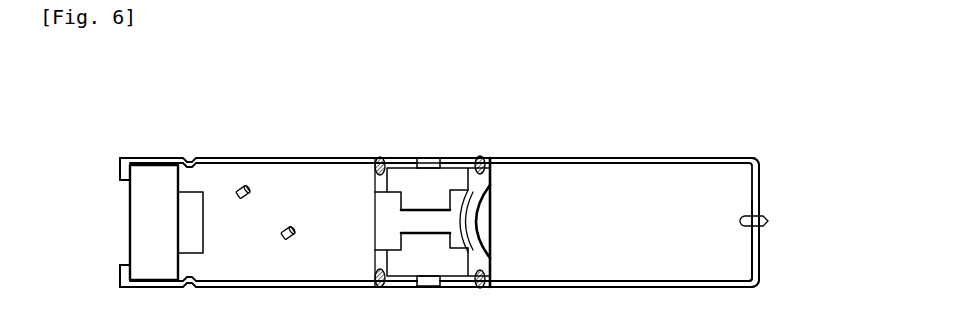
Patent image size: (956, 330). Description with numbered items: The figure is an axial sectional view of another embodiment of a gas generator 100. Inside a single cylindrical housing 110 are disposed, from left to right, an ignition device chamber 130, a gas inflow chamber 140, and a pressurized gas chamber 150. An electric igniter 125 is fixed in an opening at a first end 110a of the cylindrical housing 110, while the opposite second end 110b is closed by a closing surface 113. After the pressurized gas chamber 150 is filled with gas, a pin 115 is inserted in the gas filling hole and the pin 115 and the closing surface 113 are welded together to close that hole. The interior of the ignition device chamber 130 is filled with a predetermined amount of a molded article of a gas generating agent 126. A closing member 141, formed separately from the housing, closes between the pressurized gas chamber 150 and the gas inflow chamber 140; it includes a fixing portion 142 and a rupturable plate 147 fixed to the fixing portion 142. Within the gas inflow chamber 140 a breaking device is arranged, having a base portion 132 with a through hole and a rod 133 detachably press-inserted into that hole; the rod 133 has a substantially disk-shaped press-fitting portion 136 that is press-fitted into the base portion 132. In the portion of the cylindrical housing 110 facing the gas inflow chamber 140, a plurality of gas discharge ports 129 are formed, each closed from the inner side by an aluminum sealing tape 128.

The gas generator 100 is at (533, 150).
The cylindrical housing 110 is at (334, 157).
The first end 110a is at (120, 167).
The second end 110b is at (754, 157).
The closing surface 113 is at (749, 252).
The pin 115 is at (767, 220).
The electric igniter 125 is at (150, 228).
The gas generating agent 126 is at (240, 188).
The aluminum sealing tape 128 is at (416, 166).
The gas discharge ports 129 is at (428, 158).
The ignition device chamber 130 is at (342, 201).
The base portion 132 is at (377, 257).
The rod 133 is at (424, 224).
The press-fitting portion 136 is at (376, 221).
The gas inflow chamber 140 is at (444, 262).
The closing member 141 is at (552, 189).
The fixing portion 142 is at (482, 181).
The rupturable plate 147 is at (482, 218).
The pressurized gas chamber 150 is at (660, 222).